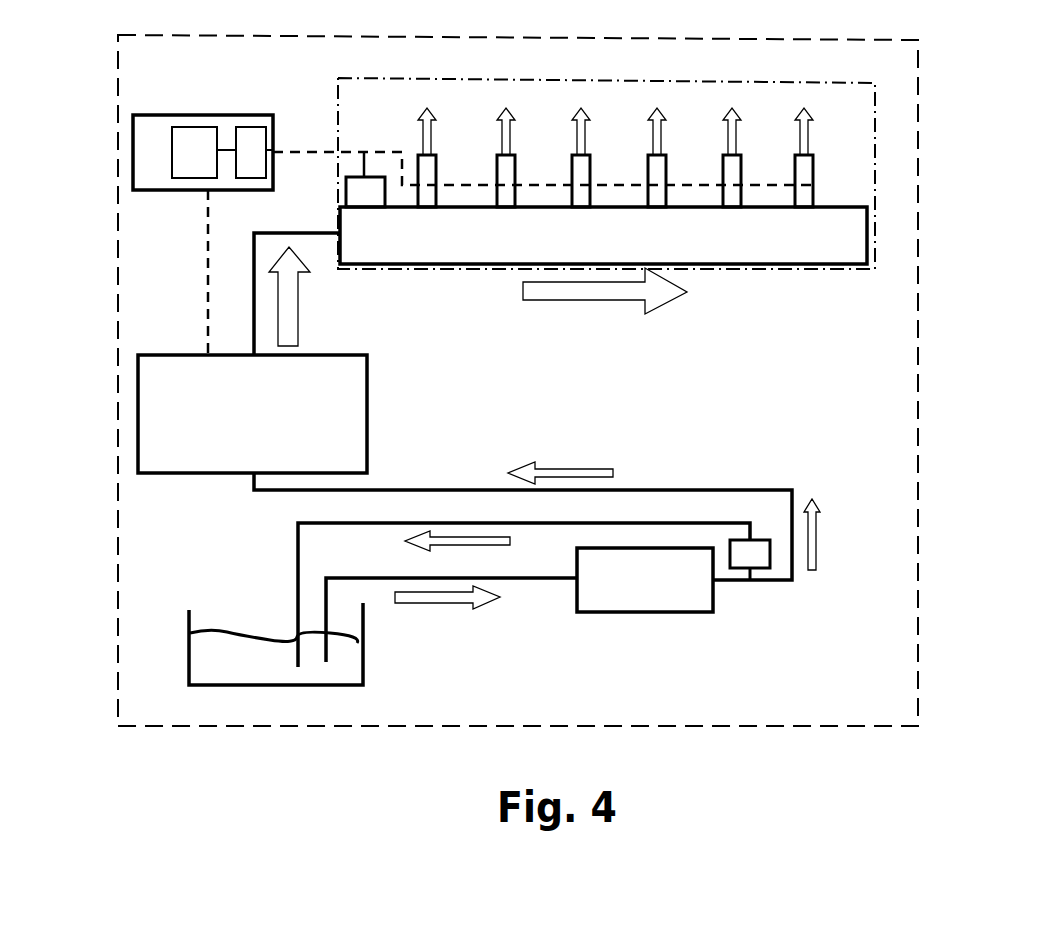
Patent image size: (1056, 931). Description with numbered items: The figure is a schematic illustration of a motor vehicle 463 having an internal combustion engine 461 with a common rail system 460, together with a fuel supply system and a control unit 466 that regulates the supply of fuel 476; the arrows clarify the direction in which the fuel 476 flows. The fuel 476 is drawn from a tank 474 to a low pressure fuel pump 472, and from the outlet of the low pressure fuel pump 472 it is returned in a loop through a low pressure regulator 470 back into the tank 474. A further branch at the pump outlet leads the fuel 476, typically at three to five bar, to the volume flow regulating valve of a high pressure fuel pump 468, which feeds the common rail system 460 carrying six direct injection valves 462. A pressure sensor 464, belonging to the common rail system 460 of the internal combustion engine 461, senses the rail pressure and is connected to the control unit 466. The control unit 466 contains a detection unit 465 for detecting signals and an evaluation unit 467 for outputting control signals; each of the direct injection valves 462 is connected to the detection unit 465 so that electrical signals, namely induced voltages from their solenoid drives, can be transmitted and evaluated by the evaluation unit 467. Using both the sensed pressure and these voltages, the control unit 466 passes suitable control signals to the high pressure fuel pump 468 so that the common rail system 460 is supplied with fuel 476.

The common rail system 460 is at (850, 207).
The internal combustion engine 461 is at (676, 83).
The direct injection valves 462 is at (845, 188).
The motor vehicle 463 is at (921, 672).
The pressure sensor 464 is at (368, 177).
The detection unit 465 is at (255, 117).
The control unit 466 is at (150, 115).
The evaluation unit 467 is at (172, 167).
The high pressure fuel pump 468 is at (369, 393).
The low pressure regulator 470 is at (777, 560).
The low pressure fuel pump 472 is at (630, 612).
The tank 474 is at (365, 655).
The fuel 476 is at (222, 667).